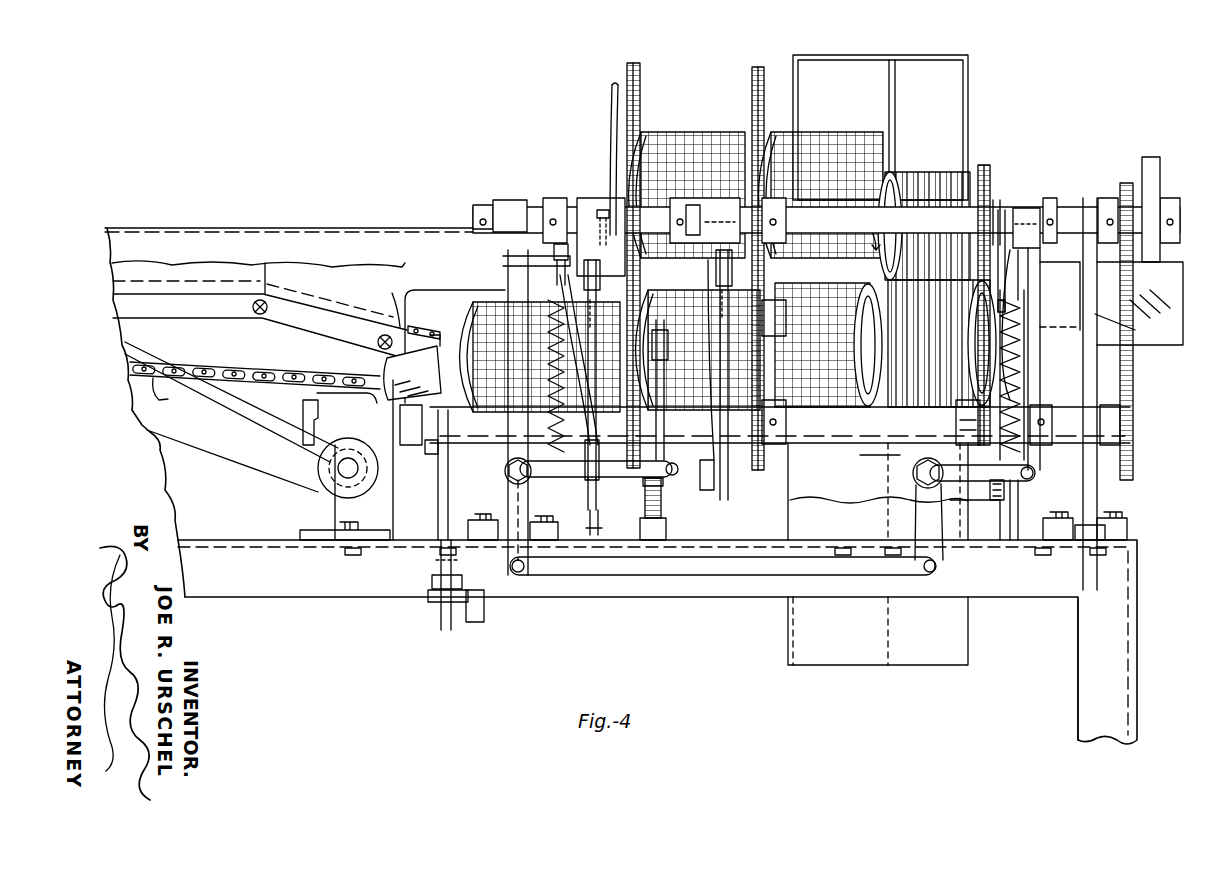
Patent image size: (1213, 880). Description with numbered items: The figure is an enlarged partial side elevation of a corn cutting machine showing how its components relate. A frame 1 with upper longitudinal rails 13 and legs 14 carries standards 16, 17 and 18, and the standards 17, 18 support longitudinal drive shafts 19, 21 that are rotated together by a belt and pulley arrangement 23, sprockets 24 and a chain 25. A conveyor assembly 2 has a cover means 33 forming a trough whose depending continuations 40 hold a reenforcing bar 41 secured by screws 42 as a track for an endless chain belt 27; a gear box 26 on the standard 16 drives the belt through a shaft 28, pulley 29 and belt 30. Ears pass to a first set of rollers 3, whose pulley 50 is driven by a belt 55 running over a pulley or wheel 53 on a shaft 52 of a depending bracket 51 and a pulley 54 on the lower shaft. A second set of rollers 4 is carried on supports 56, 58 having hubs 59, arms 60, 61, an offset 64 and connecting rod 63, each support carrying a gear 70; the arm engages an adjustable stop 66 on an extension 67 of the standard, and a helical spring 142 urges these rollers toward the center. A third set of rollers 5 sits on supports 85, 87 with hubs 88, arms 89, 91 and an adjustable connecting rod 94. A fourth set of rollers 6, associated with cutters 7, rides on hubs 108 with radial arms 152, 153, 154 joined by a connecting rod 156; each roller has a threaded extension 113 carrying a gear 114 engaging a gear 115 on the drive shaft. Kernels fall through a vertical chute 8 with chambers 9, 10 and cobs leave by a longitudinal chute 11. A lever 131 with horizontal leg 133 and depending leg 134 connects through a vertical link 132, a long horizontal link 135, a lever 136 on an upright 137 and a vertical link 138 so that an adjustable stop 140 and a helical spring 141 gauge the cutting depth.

The frame 1 is at (1143, 580).
The conveyor assembly 2 is at (252, 348).
The first set of two rollers 3 is at (473, 303).
The second set of three rollers 4 is at (721, 128).
The third set of three rollers 5 is at (833, 130).
The fourth set of three rollers 6 is at (925, 179).
The cutters 7 is at (867, 230).
The vertical chute 8 is at (974, 77).
The chamber 9 is at (804, 493).
The chamber 10 is at (894, 458).
The longitudinal chute 11 is at (1175, 283).
The upper longitudinal rails 13 is at (1040, 604).
The legs 14 is at (1115, 650).
The standard 16 is at (330, 510).
The standard 17 is at (524, 198).
The standard 18 is at (1088, 192).
The drive shaft 19 is at (1082, 170).
The drive shaft 21 is at (413, 445).
The belt and pulley arrangement 23 is at (1160, 178).
The sprockets 24 is at (1106, 196).
The chain 25 is at (1131, 384).
The gear box 26 is at (303, 430).
The endless chain belt 27 is at (418, 315).
The shaft 28 is at (338, 470).
The pulley 29 is at (318, 460).
The belt 30 is at (164, 454).
The cover means 33 is at (348, 230).
The depending parallel continuations 40 is at (202, 308).
The reenforcing bar 41 is at (436, 344).
The screws 42 is at (258, 312).
The pulley 50 is at (412, 367).
The depending bracket 51 is at (488, 615).
The shaft 52 is at (433, 594).
The pulley or wheel 53 is at (440, 623).
The pulley 54 is at (419, 463).
The belt 55 is at (440, 497).
The support or rocker 56 is at (620, 292).
The support 58 is at (610, 130).
The tubular cylindrical hub 59 is at (577, 198).
The arm 60 is at (568, 196).
The arm 61 is at (594, 521).
The connecting rod 63 is at (605, 472).
The offset 64 is at (604, 241).
The adjustable stop 66 is at (568, 250).
The extension 67 is at (520, 268).
The gear 70 is at (641, 70).
The support 85 is at (766, 286).
The support 87 is at (750, 92).
The cylindrical hub 88 is at (714, 214).
The arm 89 is at (730, 218).
The arm 91 is at (712, 496).
The adjustable connecting rod 94 is at (728, 488).
The hub 108 is at (996, 197).
The threaded extension 113 is at (1010, 360).
The gear 114 is at (1008, 340).
The gear 115 is at (985, 165).
The lever 131 is at (505, 479).
The vertical link 132 is at (682, 475).
The horizontal leg 133 is at (630, 484).
The depending leg 134 is at (506, 520).
The horizontal link 135 is at (760, 571).
The lever 136 is at (952, 464).
The upright 137 is at (951, 518).
The vertical link 138 is at (1028, 395).
The adjustable stop 140 is at (656, 501).
The helical spring 141 is at (1020, 493).
The helical spring 142 is at (540, 470).
The radial arm 152 is at (1002, 505).
The radial arm 153 is at (1014, 210).
The radial arm 154 is at (1006, 266).
The connecting rod 156 is at (1012, 284).